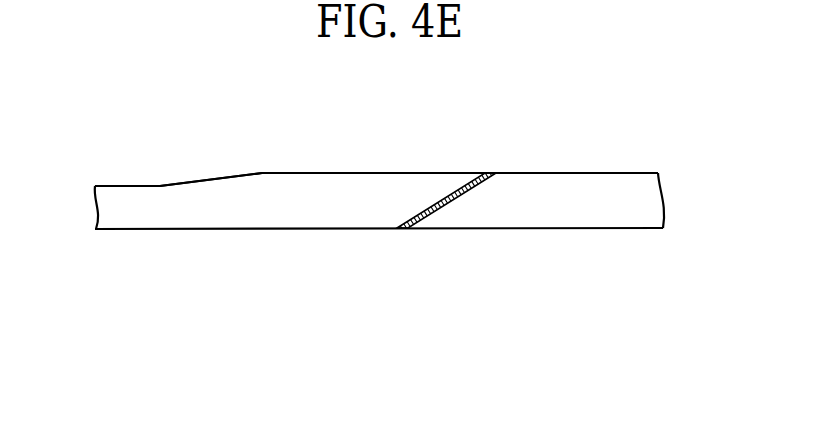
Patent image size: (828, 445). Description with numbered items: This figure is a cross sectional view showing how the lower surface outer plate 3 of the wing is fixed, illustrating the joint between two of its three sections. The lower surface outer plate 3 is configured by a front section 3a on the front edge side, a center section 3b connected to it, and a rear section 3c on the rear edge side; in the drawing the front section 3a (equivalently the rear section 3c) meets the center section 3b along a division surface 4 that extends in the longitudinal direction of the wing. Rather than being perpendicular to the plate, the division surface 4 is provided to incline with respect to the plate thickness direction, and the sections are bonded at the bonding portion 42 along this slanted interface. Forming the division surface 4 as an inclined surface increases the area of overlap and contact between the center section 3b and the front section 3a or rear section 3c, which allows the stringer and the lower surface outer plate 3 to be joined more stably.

The lower surface outer plate 3 is at (192, 259).
The front section 3a is at (250, 221).
The rear section 3c is at (224, 235).
The center section 3b is at (530, 223).
The division surface 4 is at (400, 230).
The bonding portion 42 is at (489, 173).